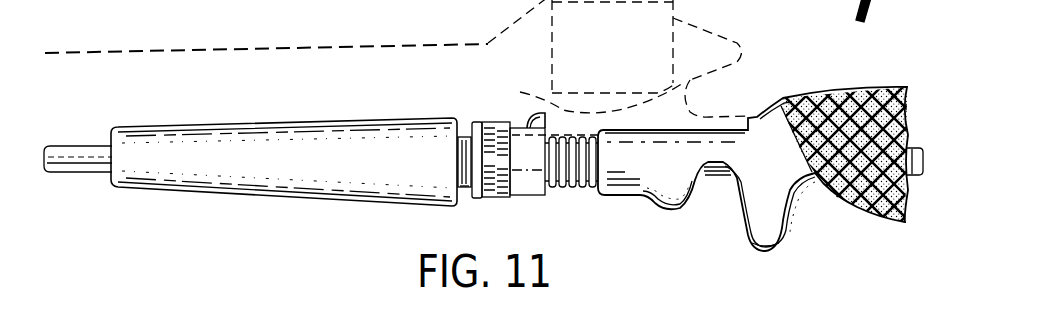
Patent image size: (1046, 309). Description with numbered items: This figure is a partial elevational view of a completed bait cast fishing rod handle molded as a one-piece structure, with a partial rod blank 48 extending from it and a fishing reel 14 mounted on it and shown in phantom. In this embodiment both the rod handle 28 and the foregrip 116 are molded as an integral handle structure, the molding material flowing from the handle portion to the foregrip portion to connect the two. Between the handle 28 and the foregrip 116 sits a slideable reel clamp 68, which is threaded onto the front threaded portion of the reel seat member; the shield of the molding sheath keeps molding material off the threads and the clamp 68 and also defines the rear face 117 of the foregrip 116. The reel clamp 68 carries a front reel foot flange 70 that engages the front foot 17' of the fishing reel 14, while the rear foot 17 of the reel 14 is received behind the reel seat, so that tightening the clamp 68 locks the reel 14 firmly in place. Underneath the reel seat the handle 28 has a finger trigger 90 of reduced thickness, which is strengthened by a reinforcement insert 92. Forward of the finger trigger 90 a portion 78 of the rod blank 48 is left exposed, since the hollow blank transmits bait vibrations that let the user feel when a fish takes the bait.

The fishing reel 14 is at (622, 58).
The rear reel foot 17 is at (716, 98).
The front reel foot 17' is at (590, 97).
The rod handle 28 is at (878, 88).
The rod blank 48 is at (74, 150).
The slideable reel clamp 68 is at (503, 190).
The front reel foot flange 70 is at (532, 118).
The exposed rod blank portion 78 is at (715, 177).
The finger trigger 90 is at (756, 246).
The reinforcement insert 92 is at (840, 0).
The foregrip 116 is at (196, 170).
The rear face of foregrip 117 is at (458, 152).